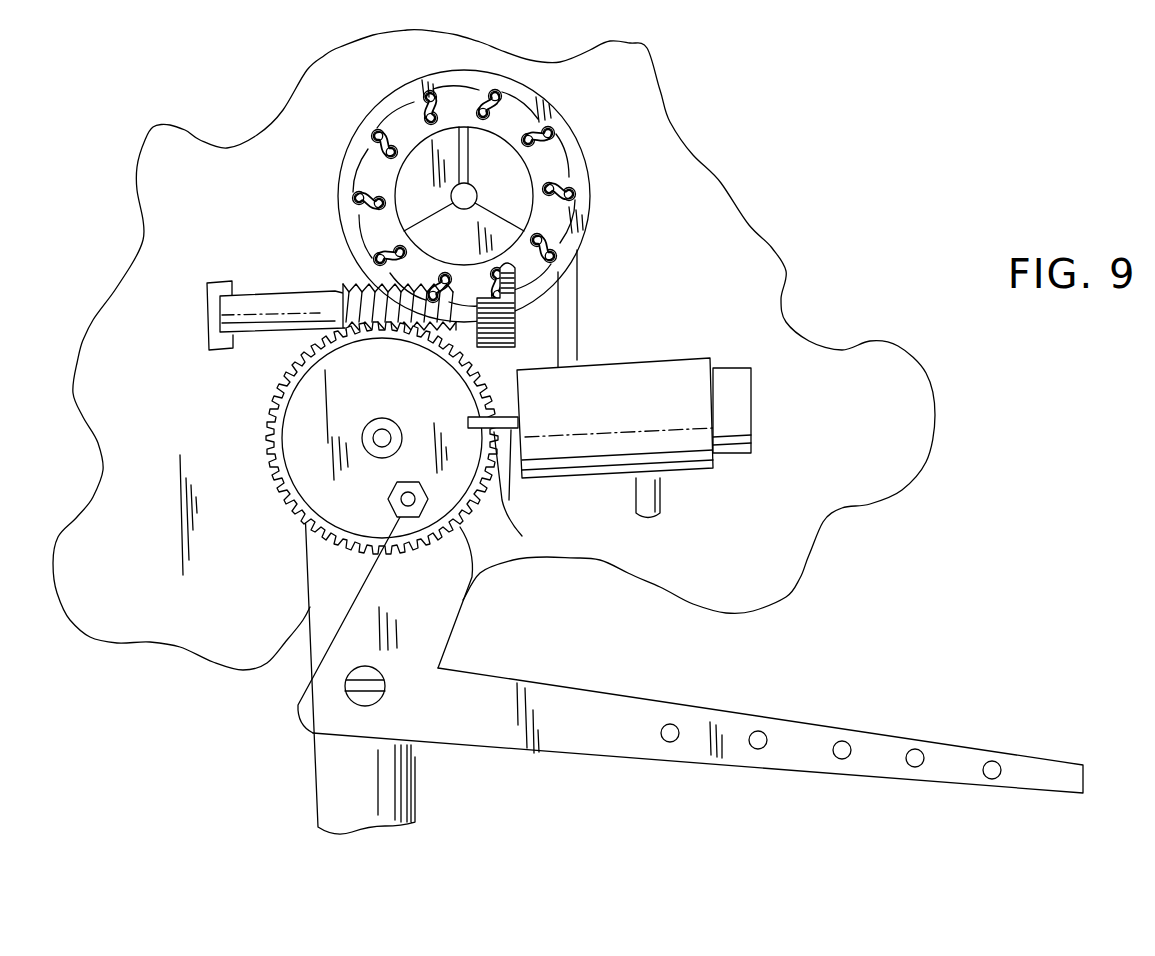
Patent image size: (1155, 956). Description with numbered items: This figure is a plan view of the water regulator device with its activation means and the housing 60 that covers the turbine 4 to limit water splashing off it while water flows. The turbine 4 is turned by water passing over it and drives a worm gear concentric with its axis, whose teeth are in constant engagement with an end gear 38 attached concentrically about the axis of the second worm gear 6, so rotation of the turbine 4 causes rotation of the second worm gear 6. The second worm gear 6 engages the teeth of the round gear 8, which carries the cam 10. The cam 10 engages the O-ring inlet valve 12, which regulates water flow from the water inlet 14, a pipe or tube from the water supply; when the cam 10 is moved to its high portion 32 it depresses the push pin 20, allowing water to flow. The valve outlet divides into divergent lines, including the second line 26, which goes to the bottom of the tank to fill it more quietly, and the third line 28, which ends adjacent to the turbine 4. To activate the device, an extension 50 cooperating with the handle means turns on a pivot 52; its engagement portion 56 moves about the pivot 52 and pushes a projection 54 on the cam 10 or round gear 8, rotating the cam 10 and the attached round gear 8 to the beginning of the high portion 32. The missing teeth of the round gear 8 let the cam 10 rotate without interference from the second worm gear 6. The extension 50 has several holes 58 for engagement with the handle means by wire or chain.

The turbine 4 is at (492, 152).
The second worm gear 6 is at (347, 283).
The round gear 8 is at (305, 515).
The cam 10 is at (293, 408).
The O-ring inlet valve 12 is at (582, 474).
The water inlet 14 is at (754, 406).
The push pin 20 is at (524, 488).
The second outlet line 26 is at (664, 492).
The third outlet line 28 is at (578, 294).
The high portion 32 is at (344, 392).
The end gear 38 is at (493, 322).
The extension 50 is at (818, 726).
The pivot 52 is at (351, 700).
The projection 54 is at (408, 566).
The engagement portion 56 is at (410, 640).
The holes 58 is at (758, 749).
The housing 60 is at (588, 157).